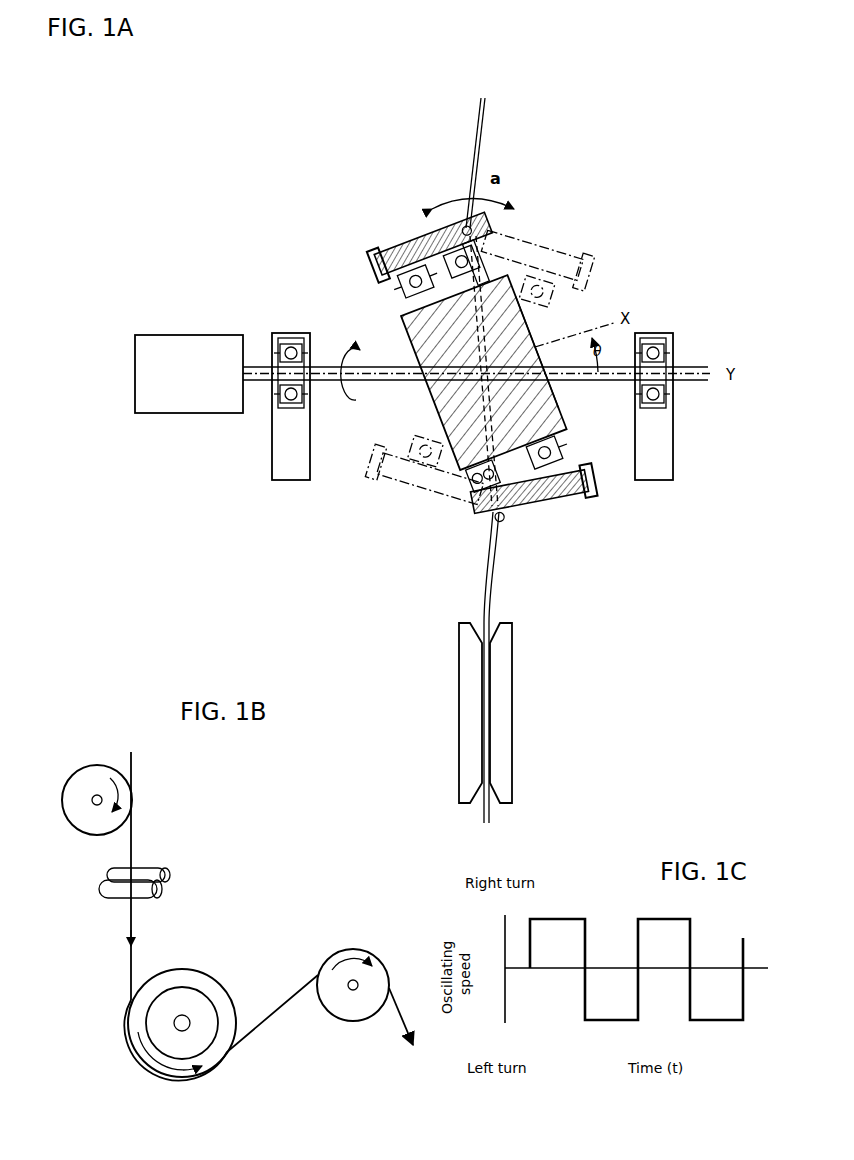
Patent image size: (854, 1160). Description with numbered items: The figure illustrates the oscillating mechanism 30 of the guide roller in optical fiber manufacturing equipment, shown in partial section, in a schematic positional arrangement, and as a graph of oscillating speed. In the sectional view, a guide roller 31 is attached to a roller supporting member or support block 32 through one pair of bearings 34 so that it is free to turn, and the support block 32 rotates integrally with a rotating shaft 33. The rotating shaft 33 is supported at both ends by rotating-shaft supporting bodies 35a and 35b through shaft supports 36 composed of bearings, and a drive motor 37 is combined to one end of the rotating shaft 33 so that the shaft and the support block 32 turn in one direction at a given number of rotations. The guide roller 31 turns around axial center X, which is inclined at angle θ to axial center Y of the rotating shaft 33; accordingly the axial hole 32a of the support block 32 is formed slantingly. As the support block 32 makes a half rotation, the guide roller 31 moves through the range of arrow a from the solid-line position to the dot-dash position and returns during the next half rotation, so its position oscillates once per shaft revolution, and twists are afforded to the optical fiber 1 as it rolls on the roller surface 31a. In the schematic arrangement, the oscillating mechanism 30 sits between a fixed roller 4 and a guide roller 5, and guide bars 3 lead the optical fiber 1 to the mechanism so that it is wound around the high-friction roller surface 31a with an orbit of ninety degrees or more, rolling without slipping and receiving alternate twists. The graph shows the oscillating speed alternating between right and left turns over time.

In FIG. 1A, the optical fiber 1 is at (488, 145).
In FIG. 1B, the optical fiber 1 is at (132, 845).
In FIG. 1B, the guide bars 3 is at (170, 875).
In FIG. 1A, the fixed roller 4 is at (512, 684).
In FIG. 1B, the fixed roller 4 is at (353, 950).
In FIG. 1B, the guide roller 5 is at (93, 782).
In FIG. 1A, the oscillating mechanism 30 is at (584, 227).
In FIG. 1B, the oscillating mechanism 30 is at (230, 960).
In FIG. 1A, the guide roller 31 is at (386, 262).
In FIG. 1B, the guide roller 31 is at (134, 1020).
In FIG. 1A, the roller surface 31a is at (452, 254).
In FIG. 1A, the support block 32 is at (425, 347).
In FIG. 1A, the axial hole 32a is at (555, 393).
In FIG. 1A, the rotating shaft 33 is at (436, 385).
In FIG. 1A, the bearings 34 is at (408, 291).
In FIG. 1A, the rotating-shaft supporting body 35a is at (281, 436).
In FIG. 1A, the rotating-shaft supporting body 35b is at (664, 460).
In FIG. 1A, the shaft supports 36 is at (296, 338).
In FIG. 1A, the drive motor 37 is at (214, 336).